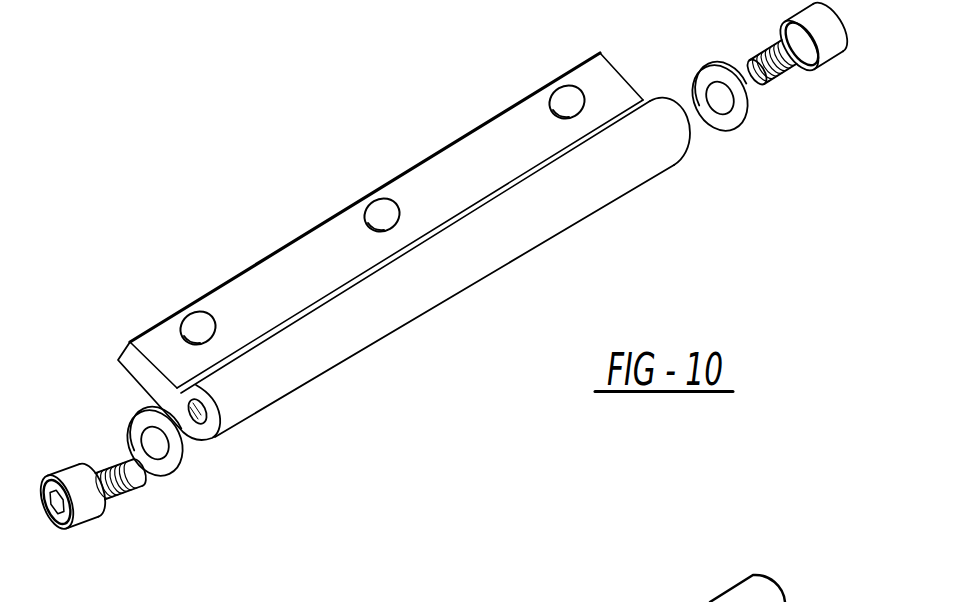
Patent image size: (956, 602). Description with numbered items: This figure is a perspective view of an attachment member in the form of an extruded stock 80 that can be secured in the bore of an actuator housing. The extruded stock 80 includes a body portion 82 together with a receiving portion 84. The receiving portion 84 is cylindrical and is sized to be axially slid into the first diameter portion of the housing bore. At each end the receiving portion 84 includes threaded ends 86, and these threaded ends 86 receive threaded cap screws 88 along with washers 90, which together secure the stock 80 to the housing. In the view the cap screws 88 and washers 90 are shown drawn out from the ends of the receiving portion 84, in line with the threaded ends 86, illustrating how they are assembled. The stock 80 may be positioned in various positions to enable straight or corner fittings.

The extruded stock 80 is at (460, 317).
The body portion 82 is at (297, 267).
The receiving portion 84 is at (262, 375).
The threaded ends 86 is at (187, 433).
The threaded cap screws 88 is at (133, 477).
The washers 90 is at (183, 457).